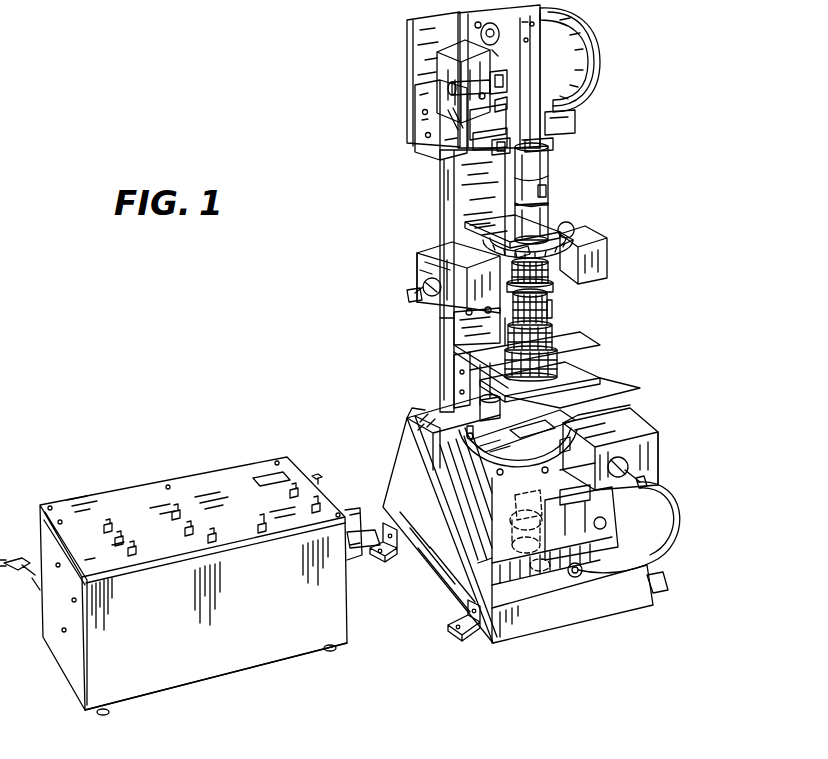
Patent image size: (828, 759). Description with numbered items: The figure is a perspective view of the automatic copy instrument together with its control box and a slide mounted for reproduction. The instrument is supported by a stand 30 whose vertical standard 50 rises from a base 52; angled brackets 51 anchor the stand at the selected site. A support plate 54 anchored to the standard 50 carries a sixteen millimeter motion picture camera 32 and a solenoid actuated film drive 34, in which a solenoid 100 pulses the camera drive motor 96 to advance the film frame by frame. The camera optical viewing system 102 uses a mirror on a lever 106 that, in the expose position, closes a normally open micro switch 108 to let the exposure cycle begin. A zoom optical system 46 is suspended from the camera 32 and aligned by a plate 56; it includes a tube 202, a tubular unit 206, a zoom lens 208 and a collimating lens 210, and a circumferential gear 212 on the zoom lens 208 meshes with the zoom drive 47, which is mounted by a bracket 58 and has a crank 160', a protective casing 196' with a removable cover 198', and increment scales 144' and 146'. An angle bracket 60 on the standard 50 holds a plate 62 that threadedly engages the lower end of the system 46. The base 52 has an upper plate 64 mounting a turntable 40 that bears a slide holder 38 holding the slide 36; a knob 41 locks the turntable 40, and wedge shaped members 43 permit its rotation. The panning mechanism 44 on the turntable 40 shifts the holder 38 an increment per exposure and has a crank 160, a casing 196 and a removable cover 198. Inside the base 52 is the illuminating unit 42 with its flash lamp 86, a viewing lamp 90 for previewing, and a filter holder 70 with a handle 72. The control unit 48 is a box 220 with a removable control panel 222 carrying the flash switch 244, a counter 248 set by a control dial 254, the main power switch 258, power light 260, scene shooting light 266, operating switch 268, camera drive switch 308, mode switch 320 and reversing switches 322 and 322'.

The stand 30 is at (436, 204).
The camera 32 is at (600, 48).
The solenoid actuated film drive 34 is at (430, 60).
The slide 36 is at (442, 482).
The slide holder 38 is at (580, 396).
The turntable 40 is at (460, 446).
The knob 41 is at (466, 384).
The illuminating unit 42 is at (620, 506).
The wedge shaped members 43 is at (470, 500).
The panning mechanism 44 is at (641, 417).
The zoom optical system 46 is at (562, 333).
The zoom drive 47 is at (410, 254).
The control unit 48 is at (247, 455).
The standard 50 is at (440, 326).
The angled brackets 51 is at (392, 563).
The base 52 is at (425, 410).
The support plate 54 is at (420, 18).
The plate 56 is at (470, 232).
The bracket 58 is at (470, 324).
The angle bracket 60 is at (440, 376).
The plate 62 is at (572, 372).
The upper plate 64 is at (478, 405).
The filter holder 70 is at (586, 564).
The handle 72 is at (575, 515).
The flash lamp 86 is at (525, 530).
The viewing lamp 90 is at (470, 566).
The drive motor 96 is at (448, 72).
The solenoid 100 is at (422, 98).
The camera optical viewing system 102 is at (555, 146).
The lever 106 is at (475, 140).
The micro switch 108 is at (500, 160).
The 360 increment scale 144' is at (564, 233).
The 240 increment scale 146' is at (609, 236).
The crank 160 is at (661, 472).
The crank 160' is at (398, 290).
The protective casing 196 is at (605, 405).
The protective casing 196' is at (611, 255).
The removable cover 198 is at (685, 455).
The removable cover 198' is at (367, 277).
The tube 202 is at (550, 166).
The tubular unit 206 is at (550, 217).
The zoom lens 208 is at (550, 276).
The collimating lens 210 is at (555, 360).
The gear 212 is at (548, 290).
The box 220 is at (157, 688).
The control panel 222 is at (62, 505).
The flash switch 244 is at (262, 520).
The counter 248 is at (265, 478).
The control dial 254 is at (320, 476).
The main power switch 258 is at (188, 532).
The power light 260 is at (172, 510).
The scene shooting light 266 is at (300, 494).
The operating switch 268 is at (300, 500).
The camera drive switch 308 is at (215, 542).
The switch 320 is at (119, 545).
The reversing switch 322 is at (116, 499).
The reversing switch 322' is at (162, 574).